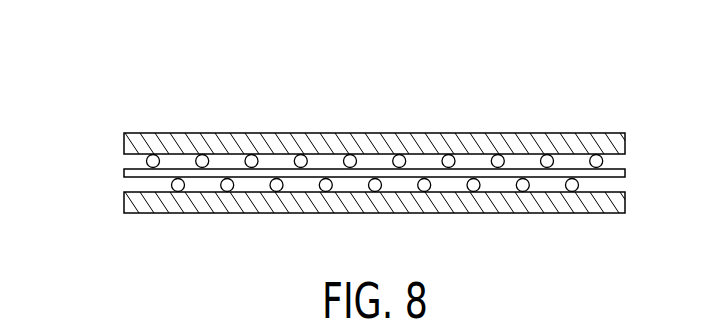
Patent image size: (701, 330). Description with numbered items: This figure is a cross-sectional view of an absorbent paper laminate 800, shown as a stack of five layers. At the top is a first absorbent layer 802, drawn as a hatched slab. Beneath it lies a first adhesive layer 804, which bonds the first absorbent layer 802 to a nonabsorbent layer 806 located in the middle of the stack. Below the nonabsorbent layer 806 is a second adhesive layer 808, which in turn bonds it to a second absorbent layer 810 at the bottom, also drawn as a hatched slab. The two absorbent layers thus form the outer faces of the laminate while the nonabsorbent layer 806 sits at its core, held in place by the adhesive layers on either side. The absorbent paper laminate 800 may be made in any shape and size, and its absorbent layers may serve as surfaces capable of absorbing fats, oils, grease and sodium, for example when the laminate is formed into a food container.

The absorbent paper laminate 800 is at (140, 78).
The first absorbent layer 802 is at (422, 132).
The first adhesive layer 804 is at (522, 157).
The nonabsorbent layer 806 is at (570, 168).
The second adhesive layer 808 is at (495, 184).
The second absorbent layer 810 is at (357, 198).